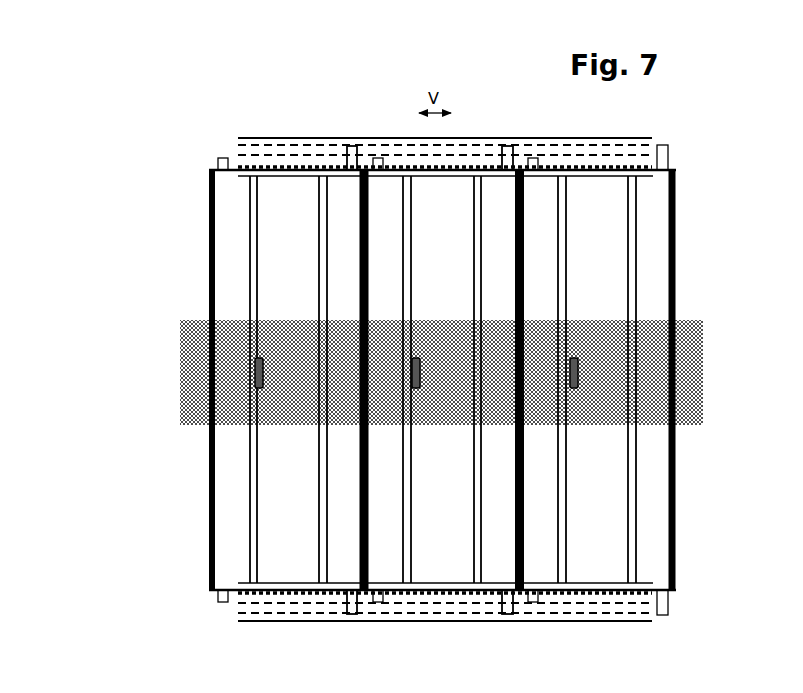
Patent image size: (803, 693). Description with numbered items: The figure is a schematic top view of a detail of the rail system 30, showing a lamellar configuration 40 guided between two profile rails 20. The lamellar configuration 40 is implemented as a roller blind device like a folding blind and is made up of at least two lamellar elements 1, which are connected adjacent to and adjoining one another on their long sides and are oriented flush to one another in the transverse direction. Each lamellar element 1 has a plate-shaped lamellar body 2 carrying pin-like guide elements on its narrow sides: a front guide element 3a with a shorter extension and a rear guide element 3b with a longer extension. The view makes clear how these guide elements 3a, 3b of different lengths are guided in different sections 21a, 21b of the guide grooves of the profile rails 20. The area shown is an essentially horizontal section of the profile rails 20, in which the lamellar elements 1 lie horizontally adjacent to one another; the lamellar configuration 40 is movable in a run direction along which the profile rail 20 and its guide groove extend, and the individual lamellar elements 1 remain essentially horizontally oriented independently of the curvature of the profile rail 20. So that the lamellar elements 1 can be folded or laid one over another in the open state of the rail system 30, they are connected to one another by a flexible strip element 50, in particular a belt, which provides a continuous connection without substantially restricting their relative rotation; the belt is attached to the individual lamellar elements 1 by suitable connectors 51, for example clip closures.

The lamellar element 1 is at (683, 243).
The lamellar body 2 is at (270, 268).
The front guide element 3a is at (380, 598).
The rear guide element 3b is at (510, 138).
The profile rail 20 is at (648, 138).
The guide groove section 21a is at (256, 160).
The guide groove section 21b is at (308, 148).
The rail system 30 is at (122, 585).
The lamellar configuration 40 is at (175, 281).
The flexible strip element 50 is at (704, 348).
The connector 51 is at (253, 367).